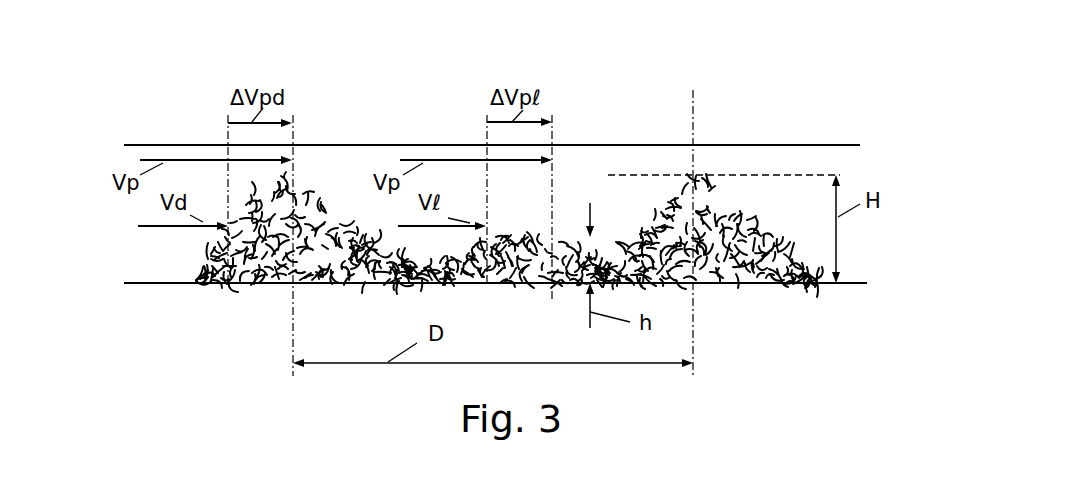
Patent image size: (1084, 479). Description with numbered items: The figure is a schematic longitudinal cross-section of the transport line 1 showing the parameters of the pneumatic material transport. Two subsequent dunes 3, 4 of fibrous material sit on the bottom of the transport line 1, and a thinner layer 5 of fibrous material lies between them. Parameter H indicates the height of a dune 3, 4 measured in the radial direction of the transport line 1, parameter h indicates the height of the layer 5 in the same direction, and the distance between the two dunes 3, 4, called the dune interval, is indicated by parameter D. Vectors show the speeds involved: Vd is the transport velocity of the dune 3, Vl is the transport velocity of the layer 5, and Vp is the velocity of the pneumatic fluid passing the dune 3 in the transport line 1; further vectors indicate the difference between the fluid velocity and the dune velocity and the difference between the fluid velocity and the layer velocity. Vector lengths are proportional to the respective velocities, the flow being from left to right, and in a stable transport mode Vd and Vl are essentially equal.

The transport line 1 is at (580, 145).
The dune 3 is at (222, 280).
The dune 4 is at (768, 283).
The layer 5 is at (505, 277).